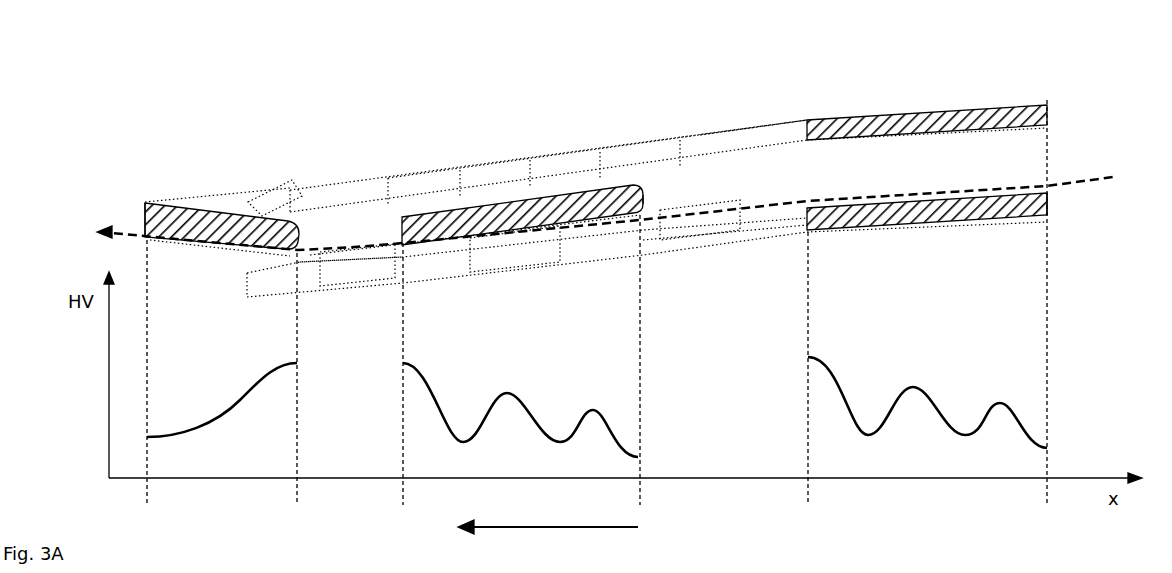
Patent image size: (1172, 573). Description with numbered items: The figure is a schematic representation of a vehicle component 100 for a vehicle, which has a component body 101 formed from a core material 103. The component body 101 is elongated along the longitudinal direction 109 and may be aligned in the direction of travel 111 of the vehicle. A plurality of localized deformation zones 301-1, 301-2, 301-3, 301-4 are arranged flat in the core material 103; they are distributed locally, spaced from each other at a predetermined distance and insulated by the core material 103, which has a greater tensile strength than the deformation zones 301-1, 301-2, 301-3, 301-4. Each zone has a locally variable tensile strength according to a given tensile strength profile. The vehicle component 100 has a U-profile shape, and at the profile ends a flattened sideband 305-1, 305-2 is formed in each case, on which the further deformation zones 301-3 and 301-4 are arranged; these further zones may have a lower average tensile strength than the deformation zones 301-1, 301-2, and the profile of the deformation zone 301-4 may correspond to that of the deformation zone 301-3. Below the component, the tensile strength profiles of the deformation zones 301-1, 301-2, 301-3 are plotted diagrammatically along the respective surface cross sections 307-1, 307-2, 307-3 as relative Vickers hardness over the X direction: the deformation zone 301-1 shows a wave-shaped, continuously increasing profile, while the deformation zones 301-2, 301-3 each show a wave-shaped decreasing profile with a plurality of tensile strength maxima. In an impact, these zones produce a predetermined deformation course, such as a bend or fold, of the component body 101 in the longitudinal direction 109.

The vehicle component 100 is at (238, 139).
The component body 101 is at (387, 187).
The core material 103 is at (365, 225).
The longitudinal direction 109 is at (606, 199).
The direction of travel 111 is at (548, 515).
The deformation zone 301-1 is at (218, 213).
The deformation zone 301-2 is at (497, 203).
The deformation zone 301-3 is at (967, 197).
The deformation zone 301-4 is at (1000, 107).
The flattened sideband 305-1 is at (690, 240).
The flattened sideband 305-2 is at (777, 133).
The surface cross section 307-1 is at (147, 220).
The surface cross section 307-2 is at (644, 195).
The surface cross section 307-3 is at (1048, 205).